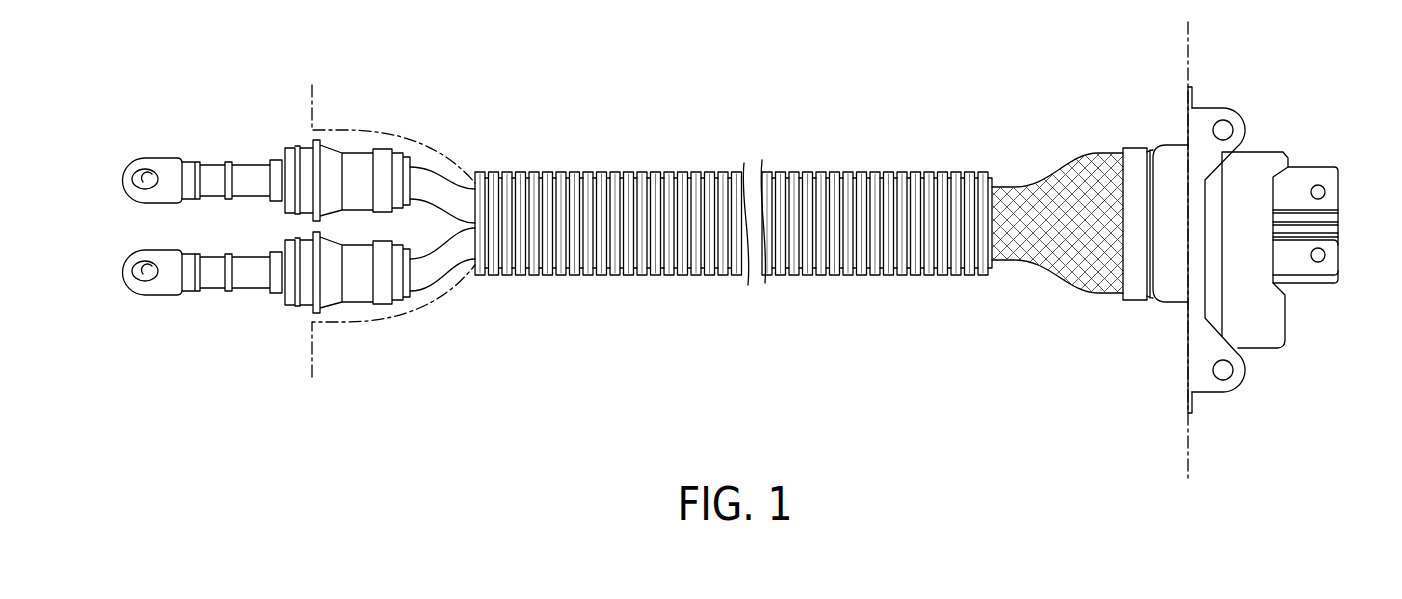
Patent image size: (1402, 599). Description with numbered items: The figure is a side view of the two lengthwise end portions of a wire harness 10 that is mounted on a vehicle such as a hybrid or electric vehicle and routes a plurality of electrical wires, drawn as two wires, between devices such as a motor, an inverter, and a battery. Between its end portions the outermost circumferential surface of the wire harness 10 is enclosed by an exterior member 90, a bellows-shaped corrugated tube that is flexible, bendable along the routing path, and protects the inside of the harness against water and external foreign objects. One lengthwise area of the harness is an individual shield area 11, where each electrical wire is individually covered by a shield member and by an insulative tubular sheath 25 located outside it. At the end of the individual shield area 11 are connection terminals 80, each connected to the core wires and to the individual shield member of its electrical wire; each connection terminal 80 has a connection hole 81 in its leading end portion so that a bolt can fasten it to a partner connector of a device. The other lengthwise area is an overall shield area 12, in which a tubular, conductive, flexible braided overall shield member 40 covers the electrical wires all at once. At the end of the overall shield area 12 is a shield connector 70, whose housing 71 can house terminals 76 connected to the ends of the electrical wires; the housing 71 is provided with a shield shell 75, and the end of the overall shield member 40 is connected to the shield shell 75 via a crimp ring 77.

The wire harness 10 is at (721, 112).
The individual shield area 11 is at (496, 172).
The overall shield area 12 is at (987, 172).
The sheath 25 is at (437, 188).
The overall shield member 40 is at (1058, 173).
The shield connector 70 is at (1272, 344).
The housing 71 is at (1265, 160).
The shield shell 75 is at (1207, 113).
The terminal 76 is at (1307, 173).
The crimp ring 77 is at (1136, 158).
The connection terminal 80 is at (173, 157).
The connection hole 81 is at (153, 172).
The exterior member 90 is at (826, 172).